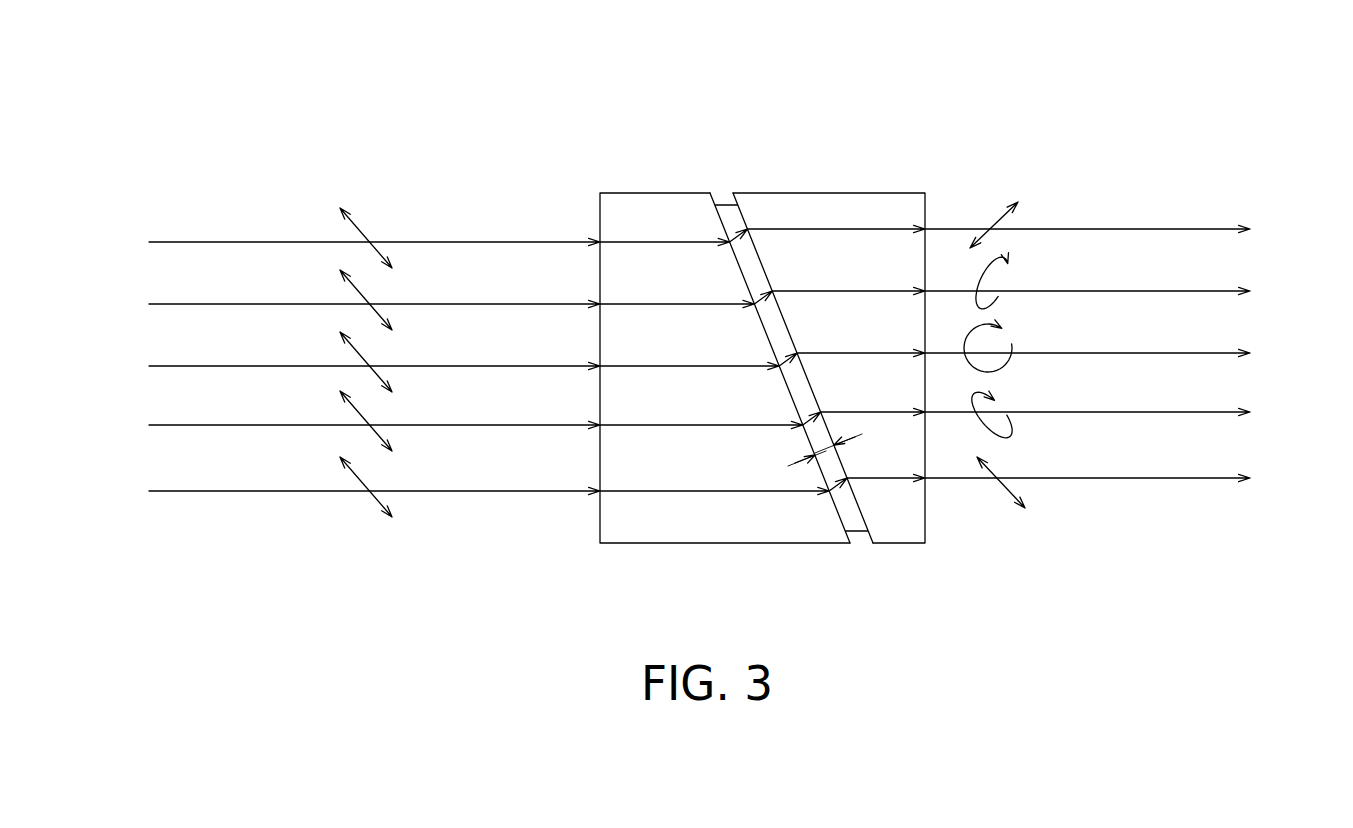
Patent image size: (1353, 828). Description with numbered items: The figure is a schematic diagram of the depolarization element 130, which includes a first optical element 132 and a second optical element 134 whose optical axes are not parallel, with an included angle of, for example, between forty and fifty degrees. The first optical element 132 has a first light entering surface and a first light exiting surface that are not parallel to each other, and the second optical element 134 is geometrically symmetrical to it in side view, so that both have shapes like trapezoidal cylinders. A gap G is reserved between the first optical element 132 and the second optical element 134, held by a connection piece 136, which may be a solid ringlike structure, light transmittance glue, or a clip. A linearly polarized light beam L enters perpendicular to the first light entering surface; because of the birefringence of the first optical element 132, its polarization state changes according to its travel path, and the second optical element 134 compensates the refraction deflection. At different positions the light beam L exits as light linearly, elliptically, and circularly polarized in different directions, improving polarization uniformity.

The depolarization element 130 is at (890, 291).
The first optical element 132 is at (655, 198).
The second optical element 134 is at (827, 198).
The connection piece 136 is at (720, 193).
The light beam L is at (232, 241).
The gap G is at (825, 449).